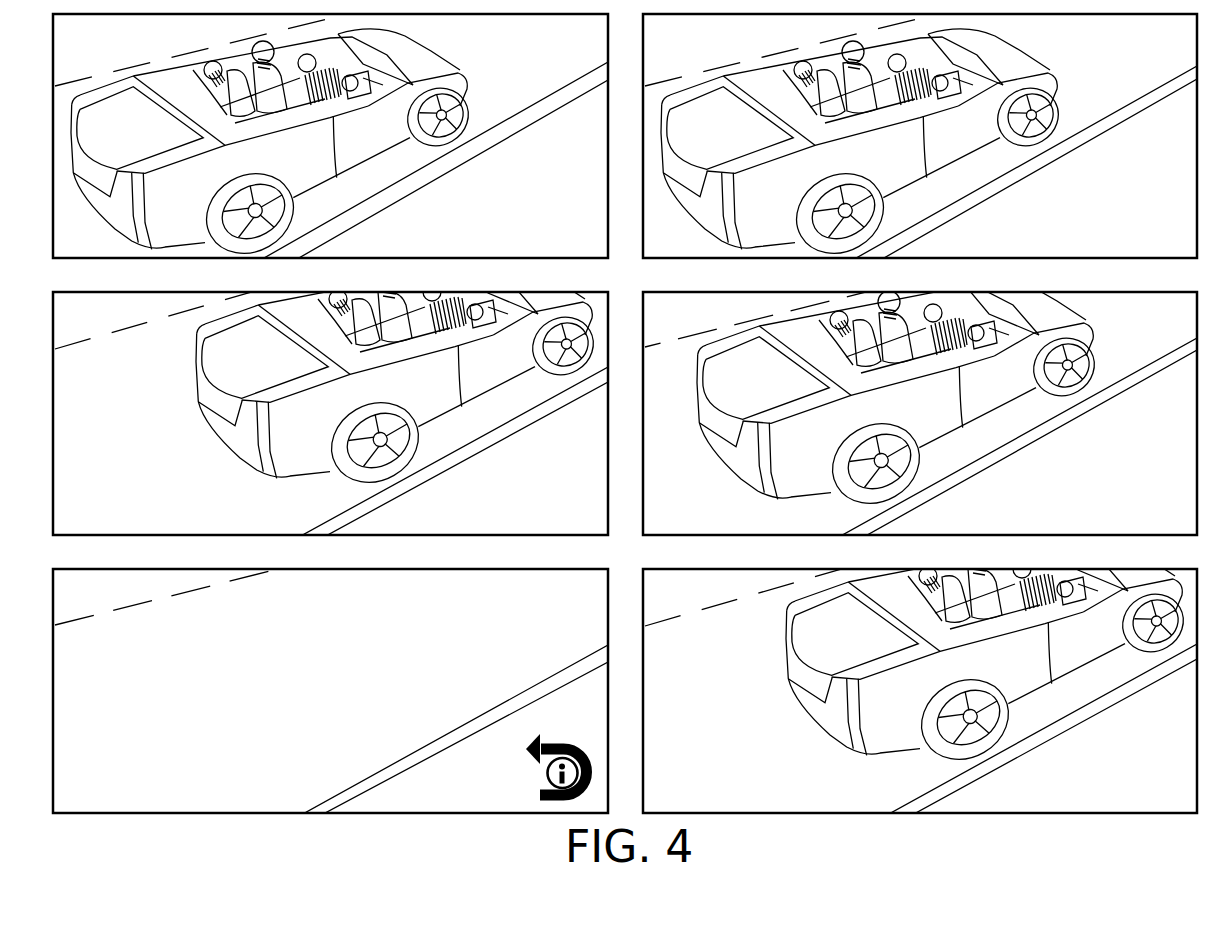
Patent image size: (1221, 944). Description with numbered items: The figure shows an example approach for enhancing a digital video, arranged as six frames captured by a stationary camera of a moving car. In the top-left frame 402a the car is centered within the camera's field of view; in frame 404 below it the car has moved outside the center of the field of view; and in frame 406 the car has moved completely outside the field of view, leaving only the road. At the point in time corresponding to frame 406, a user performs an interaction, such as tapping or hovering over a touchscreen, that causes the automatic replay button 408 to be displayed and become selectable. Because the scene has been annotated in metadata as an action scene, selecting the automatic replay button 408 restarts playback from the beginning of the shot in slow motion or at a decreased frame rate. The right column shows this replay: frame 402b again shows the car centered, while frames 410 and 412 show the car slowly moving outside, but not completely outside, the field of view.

The frame 402a is at (113, 44).
The frame 402b is at (704, 44).
The frame 404 is at (100, 322).
The frame 406 is at (100, 598).
The automatic replay button 408 is at (523, 797).
The frame 410 is at (690, 322).
The frame 412 is at (690, 598).